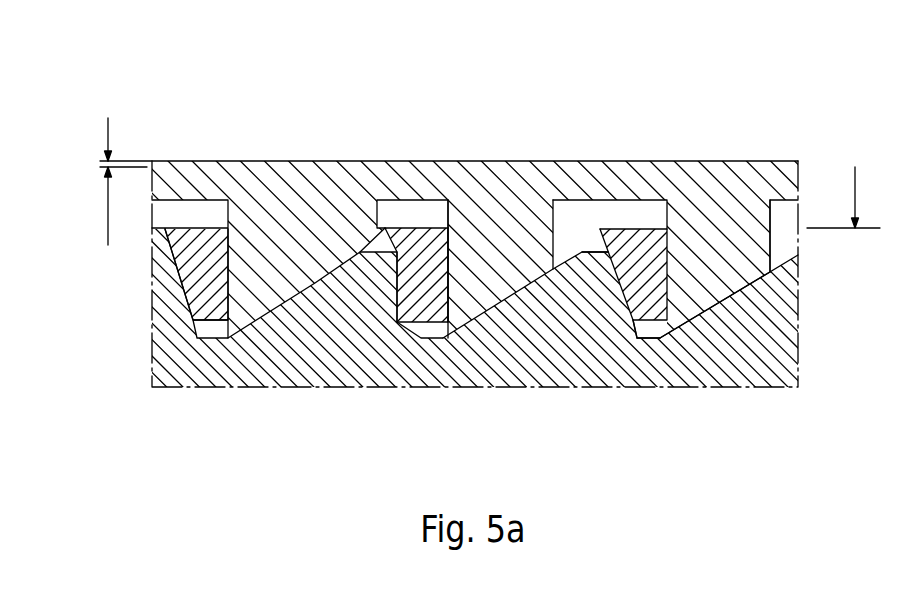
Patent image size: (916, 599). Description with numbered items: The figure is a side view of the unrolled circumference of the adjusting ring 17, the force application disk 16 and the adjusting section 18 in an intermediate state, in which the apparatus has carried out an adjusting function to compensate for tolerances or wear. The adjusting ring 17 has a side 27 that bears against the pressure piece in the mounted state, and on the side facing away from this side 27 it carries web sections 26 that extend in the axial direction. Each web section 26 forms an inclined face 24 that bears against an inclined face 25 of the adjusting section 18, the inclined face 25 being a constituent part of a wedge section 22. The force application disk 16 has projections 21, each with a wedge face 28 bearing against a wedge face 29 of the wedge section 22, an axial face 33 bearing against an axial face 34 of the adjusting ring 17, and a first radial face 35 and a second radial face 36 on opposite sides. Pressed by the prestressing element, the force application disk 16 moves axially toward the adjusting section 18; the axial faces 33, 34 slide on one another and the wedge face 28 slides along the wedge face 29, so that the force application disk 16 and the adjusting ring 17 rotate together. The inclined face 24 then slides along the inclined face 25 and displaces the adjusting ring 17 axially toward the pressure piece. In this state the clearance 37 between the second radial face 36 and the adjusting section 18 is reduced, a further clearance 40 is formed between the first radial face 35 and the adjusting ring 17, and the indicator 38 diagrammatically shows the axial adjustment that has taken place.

The force application disk 16 is at (576, 232).
The adjusting ring 17 is at (777, 184).
The adjusting section 18 is at (743, 343).
The projection 21 is at (647, 256).
The wedge section 22 is at (560, 328).
The inclined face 24 is at (294, 303).
The inclined face 25 is at (266, 305).
The web section 26 is at (702, 238).
The side 27 is at (232, 158).
The wedge face 28 is at (393, 294).
The wedge face 29 is at (413, 294).
The axial face 33 is at (451, 241).
The axial face 34 is at (446, 260).
The first radial face 35 is at (628, 225).
The second radial face 36 is at (650, 325).
The clearance 37 is at (435, 337).
The indicator 38 is at (100, 174).
The further clearance 40 is at (389, 210).